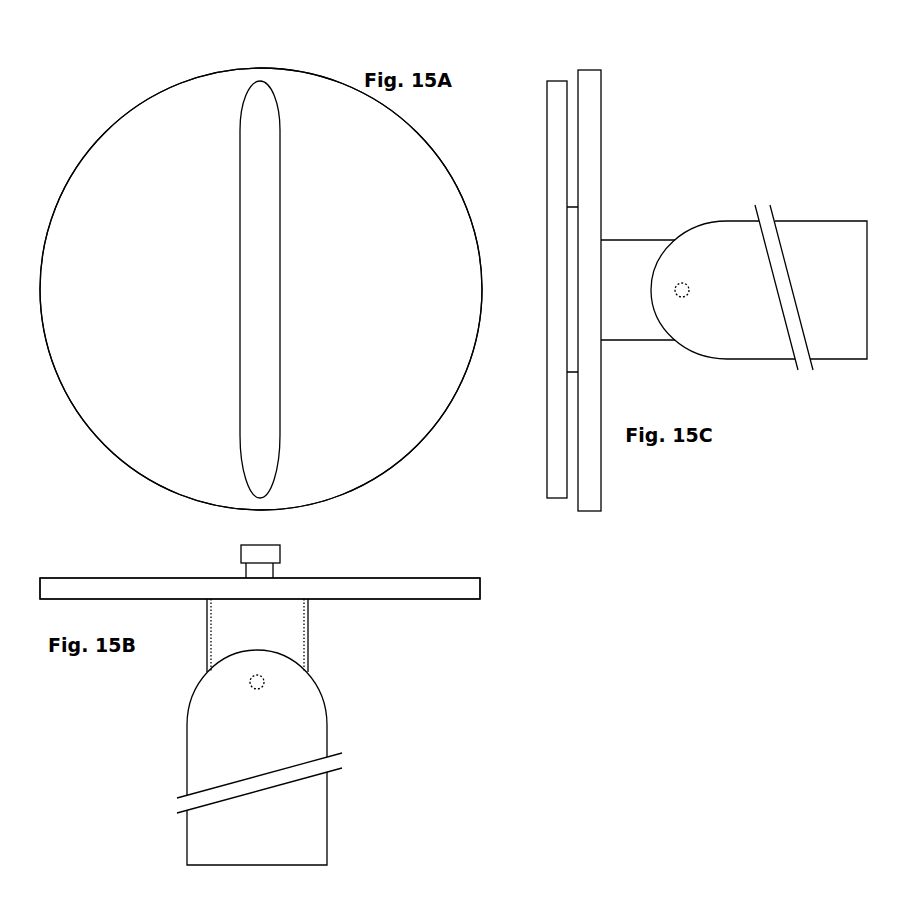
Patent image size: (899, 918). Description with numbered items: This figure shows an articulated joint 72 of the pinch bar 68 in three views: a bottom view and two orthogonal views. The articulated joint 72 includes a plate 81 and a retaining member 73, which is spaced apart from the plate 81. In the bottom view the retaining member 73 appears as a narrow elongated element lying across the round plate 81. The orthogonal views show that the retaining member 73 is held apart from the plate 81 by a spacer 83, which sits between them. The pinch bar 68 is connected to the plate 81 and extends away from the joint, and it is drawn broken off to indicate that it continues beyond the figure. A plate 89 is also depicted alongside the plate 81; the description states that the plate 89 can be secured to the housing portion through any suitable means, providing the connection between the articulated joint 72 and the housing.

In FIG. 15B, the pinch bar 68 is at (323, 720).
In FIG. 15C, the pinch bar 68 is at (813, 225).
In FIG. 15A, the articulated joint 72 is at (85, 158).
In FIG. 15A, the retaining member 73 is at (274, 377).
In FIG. 15B, the retaining member 73 is at (280, 553).
In FIG. 15C, the retaining member 73 is at (556, 483).
In FIG. 15A, the plate 81 is at (185, 122).
In FIG. 15B, the plate 81 is at (92, 587).
In FIG. 15B, the spacer 83 is at (273, 571).
In FIG. 15B, the plate 89 is at (447, 597).
In FIG. 15C, the plate 89 is at (601, 180).